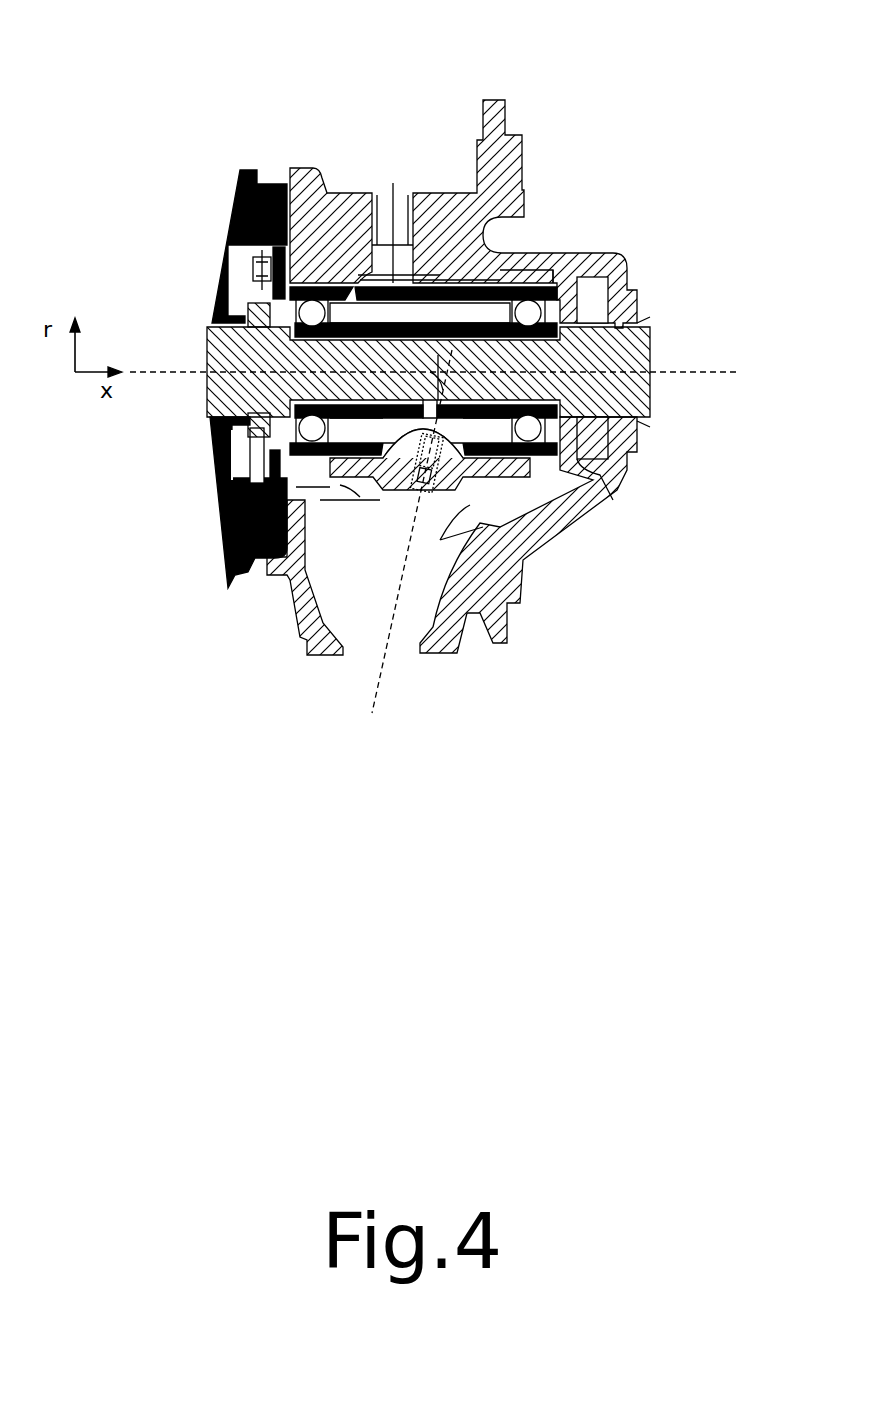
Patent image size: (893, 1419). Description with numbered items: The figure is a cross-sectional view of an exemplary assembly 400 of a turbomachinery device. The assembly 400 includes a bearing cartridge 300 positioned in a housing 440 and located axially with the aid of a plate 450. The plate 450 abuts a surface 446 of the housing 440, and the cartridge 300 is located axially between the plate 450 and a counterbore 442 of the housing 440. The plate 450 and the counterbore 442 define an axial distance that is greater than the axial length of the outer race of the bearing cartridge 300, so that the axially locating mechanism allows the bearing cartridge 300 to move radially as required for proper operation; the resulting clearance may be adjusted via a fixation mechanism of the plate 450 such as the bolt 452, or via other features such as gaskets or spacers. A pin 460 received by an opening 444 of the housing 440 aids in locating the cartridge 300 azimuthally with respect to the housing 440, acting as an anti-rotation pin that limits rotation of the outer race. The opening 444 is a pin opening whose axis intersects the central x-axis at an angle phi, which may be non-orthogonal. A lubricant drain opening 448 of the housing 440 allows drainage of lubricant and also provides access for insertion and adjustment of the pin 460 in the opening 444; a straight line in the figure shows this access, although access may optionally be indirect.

The assembly 400 is at (268, 72).
The housing 440 is at (538, 253).
The counterbore 442 is at (555, 287).
The opening 444 is at (420, 447).
The surface 446 is at (283, 240).
The lubricant drain opening 448 is at (345, 655).
The plate 450 is at (270, 482).
The bolt 452 is at (255, 268).
The pin 460 is at (415, 490).
The bearing cartridge 300 is at (557, 457).